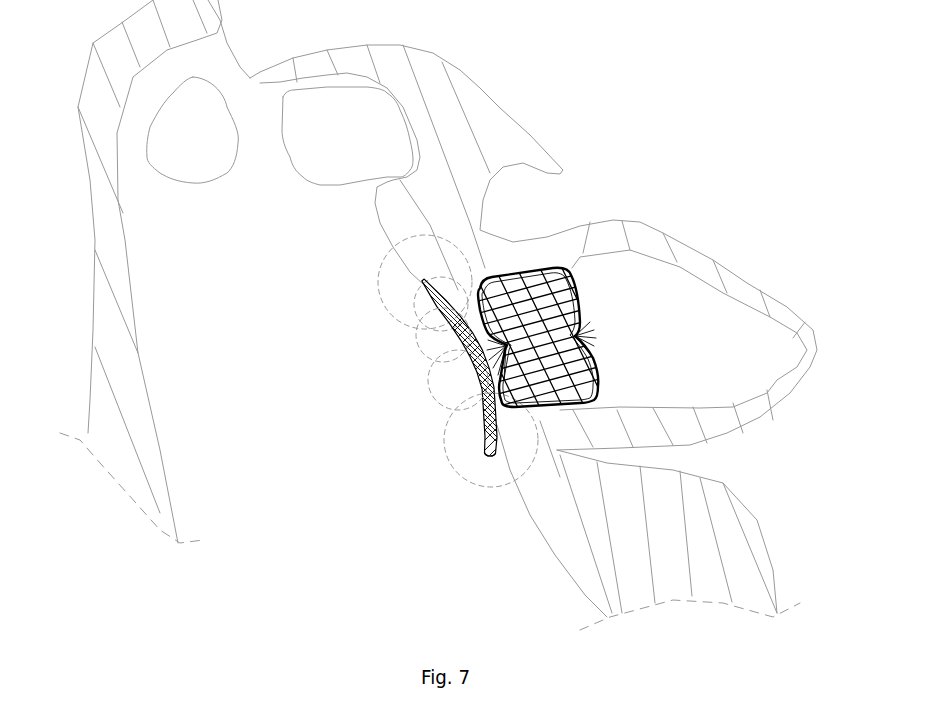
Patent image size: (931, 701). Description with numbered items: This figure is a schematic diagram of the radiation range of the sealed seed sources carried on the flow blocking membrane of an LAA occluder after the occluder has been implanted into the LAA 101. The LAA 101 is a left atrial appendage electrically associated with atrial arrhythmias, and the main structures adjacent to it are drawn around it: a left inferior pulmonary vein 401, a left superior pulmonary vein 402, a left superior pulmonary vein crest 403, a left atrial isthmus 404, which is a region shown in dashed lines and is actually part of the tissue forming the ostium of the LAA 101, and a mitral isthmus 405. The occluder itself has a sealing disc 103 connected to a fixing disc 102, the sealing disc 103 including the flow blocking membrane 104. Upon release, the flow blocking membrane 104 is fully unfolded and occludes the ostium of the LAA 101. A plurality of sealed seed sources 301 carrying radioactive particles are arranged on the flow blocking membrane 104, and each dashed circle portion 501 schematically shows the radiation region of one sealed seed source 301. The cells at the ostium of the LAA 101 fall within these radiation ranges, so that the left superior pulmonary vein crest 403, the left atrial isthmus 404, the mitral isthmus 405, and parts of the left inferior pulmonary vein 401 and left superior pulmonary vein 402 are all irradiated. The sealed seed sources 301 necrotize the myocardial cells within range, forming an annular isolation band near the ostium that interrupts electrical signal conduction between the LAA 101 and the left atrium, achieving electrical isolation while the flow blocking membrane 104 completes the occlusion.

The LAA 101 is at (692, 308).
The fixing disc 102 is at (577, 286).
The sealing disc 103 is at (391, 492).
The flow blocking membrane 104 is at (404, 440).
The sealed seed source 301 is at (380, 395).
The left inferior pulmonary vein 401 is at (255, 91).
The left superior pulmonary vein 402 is at (401, 92).
The left superior pulmonary vein crest 403 is at (363, 269).
The left atrial isthmus 404 is at (422, 362).
The mitral isthmus 405 is at (606, 525).
The dashed circle portion 501 is at (371, 347).